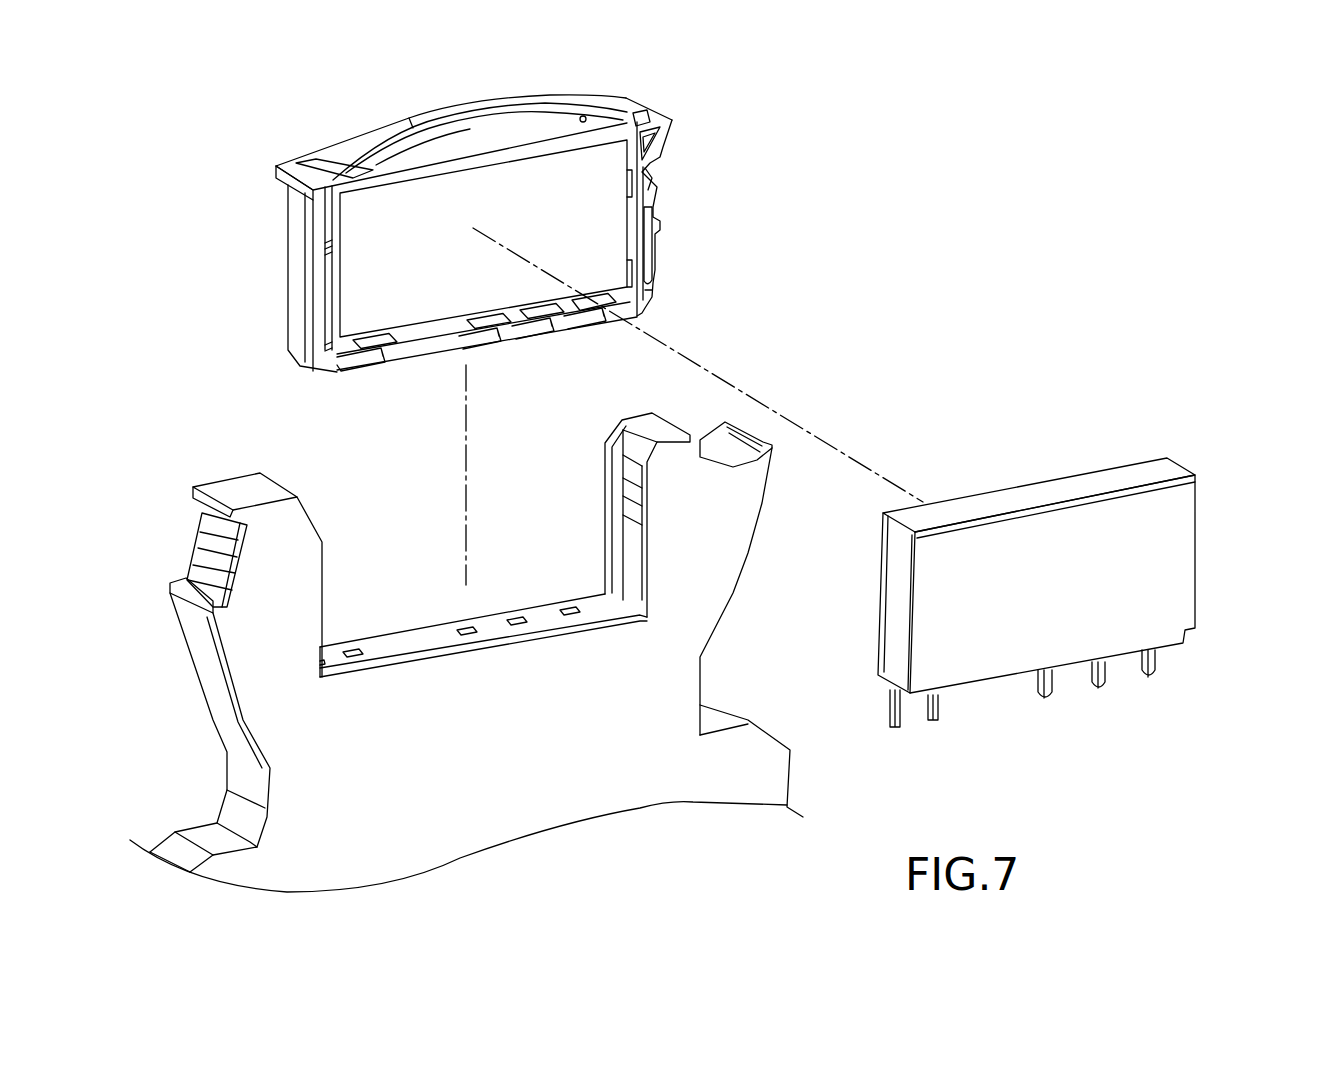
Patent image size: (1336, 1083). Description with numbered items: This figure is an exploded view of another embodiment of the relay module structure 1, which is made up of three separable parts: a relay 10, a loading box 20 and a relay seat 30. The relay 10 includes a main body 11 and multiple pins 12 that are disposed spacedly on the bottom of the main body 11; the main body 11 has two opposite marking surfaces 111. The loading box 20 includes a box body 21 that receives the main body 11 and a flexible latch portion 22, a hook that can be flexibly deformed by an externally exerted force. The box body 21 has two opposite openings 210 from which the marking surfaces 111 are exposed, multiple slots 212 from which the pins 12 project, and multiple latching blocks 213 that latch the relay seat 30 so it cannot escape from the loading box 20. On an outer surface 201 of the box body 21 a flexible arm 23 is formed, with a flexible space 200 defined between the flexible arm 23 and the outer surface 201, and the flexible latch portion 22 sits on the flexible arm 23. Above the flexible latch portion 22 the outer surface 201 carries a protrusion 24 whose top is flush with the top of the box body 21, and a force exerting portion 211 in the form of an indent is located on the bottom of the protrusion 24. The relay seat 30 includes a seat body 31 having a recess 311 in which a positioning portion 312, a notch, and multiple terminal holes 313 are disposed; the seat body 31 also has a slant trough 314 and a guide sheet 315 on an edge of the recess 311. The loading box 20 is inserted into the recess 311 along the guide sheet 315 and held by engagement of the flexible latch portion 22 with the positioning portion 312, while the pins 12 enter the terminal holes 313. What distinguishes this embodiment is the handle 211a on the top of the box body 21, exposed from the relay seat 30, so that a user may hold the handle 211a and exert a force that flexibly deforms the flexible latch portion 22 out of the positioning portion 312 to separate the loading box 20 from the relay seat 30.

The relay module structure 1 is at (1050, 205).
The relay 10 is at (1022, 444).
The main body 11 is at (1118, 475).
The marking surfaces 111 is at (1157, 565).
The pins 12 is at (1050, 678).
The loading box 20 is at (770, 171).
The box body 21 is at (640, 110).
The force exerting portion 211 is at (650, 172).
The handle 211a is at (422, 117).
The slots 212 is at (503, 340).
The latching blocks 213 is at (625, 180).
The flexible latch portion 22 is at (672, 209).
The flexible arm 23 is at (656, 260).
The protrusion 24 is at (672, 125).
The flexible space 200 is at (660, 249).
The outer surface 201 is at (651, 272).
The openings 210 is at (387, 290).
The relay seat 30 is at (211, 466).
The seat body 31 is at (330, 740).
The recess 311 is at (350, 498).
The positioning portion 312 is at (637, 517).
The terminal holes 313 is at (460, 623).
The slant trough 314 is at (645, 435).
The guide sheet 315 is at (658, 498).